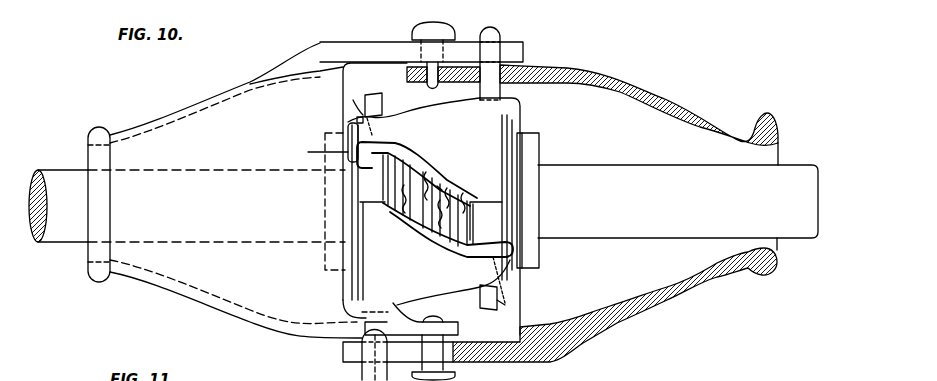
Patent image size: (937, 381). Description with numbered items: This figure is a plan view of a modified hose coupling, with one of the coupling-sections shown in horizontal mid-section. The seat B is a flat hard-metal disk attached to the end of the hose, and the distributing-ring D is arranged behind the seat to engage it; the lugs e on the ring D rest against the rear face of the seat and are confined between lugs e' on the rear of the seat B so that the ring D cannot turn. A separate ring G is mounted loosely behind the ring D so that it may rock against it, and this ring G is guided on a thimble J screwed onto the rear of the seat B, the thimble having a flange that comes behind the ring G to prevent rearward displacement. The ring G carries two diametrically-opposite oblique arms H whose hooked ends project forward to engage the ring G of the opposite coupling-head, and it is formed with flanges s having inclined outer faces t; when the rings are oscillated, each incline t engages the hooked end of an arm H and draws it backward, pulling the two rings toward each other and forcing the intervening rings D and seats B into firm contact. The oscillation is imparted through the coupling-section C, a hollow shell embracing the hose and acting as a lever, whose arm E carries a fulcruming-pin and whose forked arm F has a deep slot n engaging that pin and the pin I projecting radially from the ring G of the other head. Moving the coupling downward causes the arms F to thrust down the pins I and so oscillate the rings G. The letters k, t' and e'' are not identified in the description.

The coupling-section C is at (444, 202).
The collar k is at (433, 191).
The forked arm F is at (583, 353).
The pin I is at (501, 34).
The screw t' is at (433, 192).
The arm E is at (407, 75).
The ring G is at (429, 197).
The flange s is at (427, 201).
The inclined outer face t is at (405, 203).
The distributing-ring D is at (399, 170).
The arm H is at (437, 160).
The lug e is at (441, 190).
The lug e' is at (438, 202).
The contact spring e'' is at (447, 214).
The seat B is at (440, 185).
The thimble J is at (527, 153).
The slot n is at (398, 354).